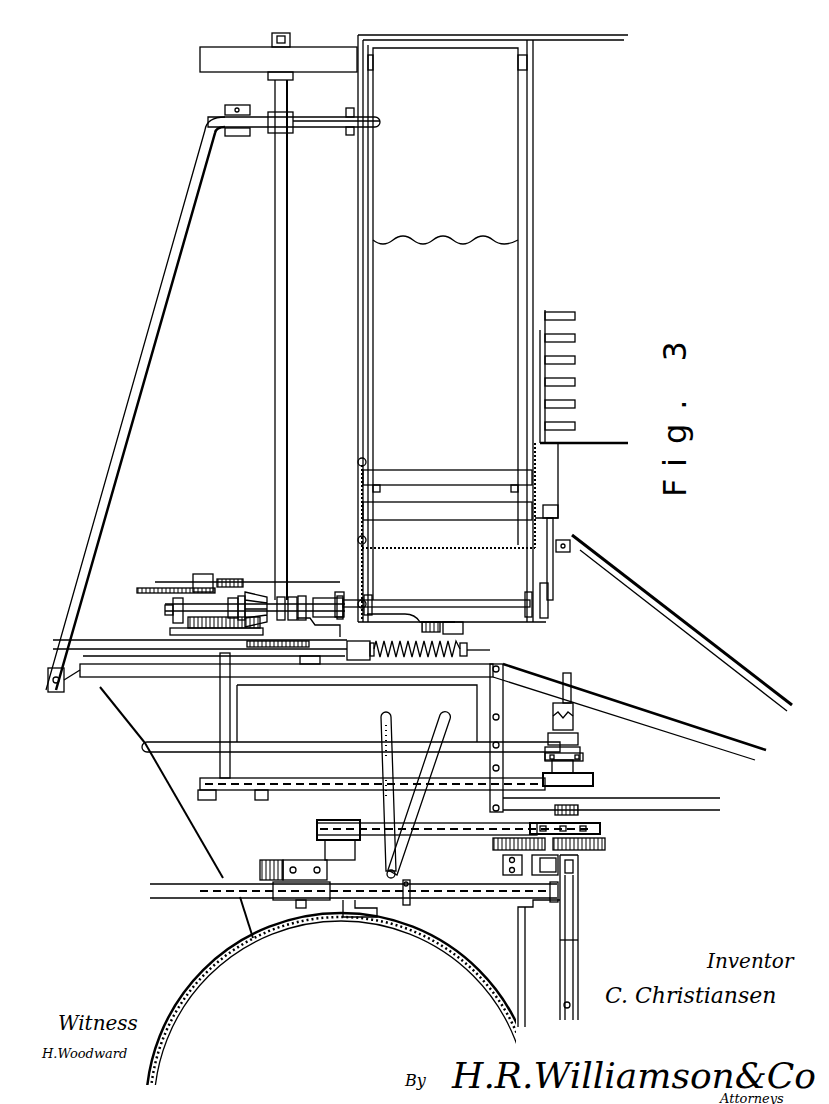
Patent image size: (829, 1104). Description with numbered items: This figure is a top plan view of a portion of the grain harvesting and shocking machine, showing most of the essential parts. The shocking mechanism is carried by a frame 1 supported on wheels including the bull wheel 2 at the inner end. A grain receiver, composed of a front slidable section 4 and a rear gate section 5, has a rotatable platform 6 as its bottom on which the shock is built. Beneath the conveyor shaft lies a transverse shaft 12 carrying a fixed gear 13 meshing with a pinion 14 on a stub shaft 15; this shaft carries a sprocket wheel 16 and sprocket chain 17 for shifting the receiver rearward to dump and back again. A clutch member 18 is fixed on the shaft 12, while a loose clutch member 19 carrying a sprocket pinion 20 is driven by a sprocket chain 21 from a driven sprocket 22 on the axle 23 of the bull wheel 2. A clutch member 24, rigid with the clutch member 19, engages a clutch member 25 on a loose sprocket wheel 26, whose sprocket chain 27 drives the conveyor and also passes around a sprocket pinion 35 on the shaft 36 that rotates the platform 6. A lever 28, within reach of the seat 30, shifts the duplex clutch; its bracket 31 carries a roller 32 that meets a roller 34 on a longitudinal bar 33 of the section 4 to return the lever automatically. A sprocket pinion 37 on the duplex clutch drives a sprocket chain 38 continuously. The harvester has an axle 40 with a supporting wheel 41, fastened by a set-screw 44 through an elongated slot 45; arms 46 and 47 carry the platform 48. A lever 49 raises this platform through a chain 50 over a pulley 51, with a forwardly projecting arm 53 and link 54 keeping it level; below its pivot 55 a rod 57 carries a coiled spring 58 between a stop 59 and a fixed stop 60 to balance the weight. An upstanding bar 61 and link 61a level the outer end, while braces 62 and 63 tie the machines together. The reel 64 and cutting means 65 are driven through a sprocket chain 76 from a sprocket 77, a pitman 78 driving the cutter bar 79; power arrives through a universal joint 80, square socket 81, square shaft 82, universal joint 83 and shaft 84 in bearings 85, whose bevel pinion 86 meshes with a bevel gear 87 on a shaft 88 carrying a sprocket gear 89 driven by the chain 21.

The frame 1 is at (580, 941).
The bull wheel 2 is at (222, 720).
The front slidable section 4 is at (468, 968).
The rear gate section 5 is at (238, 948).
The rotatable platform 6 is at (341, 1012).
The transverse shaft 12 is at (566, 704).
The gear 13 is at (600, 832).
The pinion 14 is at (494, 845).
The stub shaft 15 is at (503, 865).
The sprocket wheel 16 is at (535, 878).
The sprocket chain 17 is at (517, 910).
The clutch member 18 is at (574, 715).
The clutch member 19 is at (580, 745).
The sprocket pinion 20 is at (596, 783).
The sprocket chain 21 is at (245, 792).
The driven sprocket 22 is at (318, 665).
The axle 23 is at (372, 660).
The clutch member 24 is at (620, 810).
The clutch member 25 is at (606, 845).
The sprocket wheel 26 is at (580, 868).
The sprocket chain 27 is at (440, 822).
The lever 28 is at (488, 690).
The seat 30 is at (406, 906).
The bracket 31 is at (391, 720).
The roller 32 is at (375, 918).
The longitudinal bar 33 is at (490, 900).
The roller 34 is at (406, 906).
The sprocket pinion 35 is at (315, 830).
The shaft 36 is at (320, 835).
The sprocket pinion 37 is at (584, 757).
The sprocket chain 38 is at (555, 720).
The axle 40 is at (274, 420).
The supporting wheel 41 is at (510, 222).
The set-screw 44 is at (262, 47).
The elongated slot 45 is at (250, 136).
The arm 46 is at (418, 623).
The arm 47 is at (310, 118).
The platform 48 is at (535, 160).
The lever 49 is at (82, 692).
The chain 50 is at (328, 618).
The pulley 51 is at (440, 626).
The forwardly projecting arm 53 is at (282, 622).
The link 54 is at (300, 612).
The pivot 55 is at (270, 640).
The rod 57 is at (455, 622).
The coiled spring 58 is at (415, 660).
The stop 59 is at (482, 653).
The fixed stop 60 is at (357, 662).
The upstanding bar 61 is at (348, 132).
The link 61a is at (324, 133).
The brace 62 is at (608, 568).
The brace 63 is at (118, 478).
The reel 64 is at (560, 478).
The cutting means 65 is at (577, 345).
The sprocket chain 76 is at (340, 590).
The sprocket 77 is at (371, 600).
The pitman 78 is at (552, 570).
The cutter bar 79 is at (356, 505).
The universal joint 80 is at (306, 612).
The square socket 81 is at (232, 596).
The square shaft 82 is at (266, 590).
The universal joint 83 is at (257, 590).
The shaft 84 is at (172, 596).
The bearings 85 is at (188, 621).
The bevel pinion 86 is at (205, 574).
The bevel gear 87 is at (142, 585).
The shaft 88 is at (220, 690).
The sprocket gear 89 is at (165, 765).